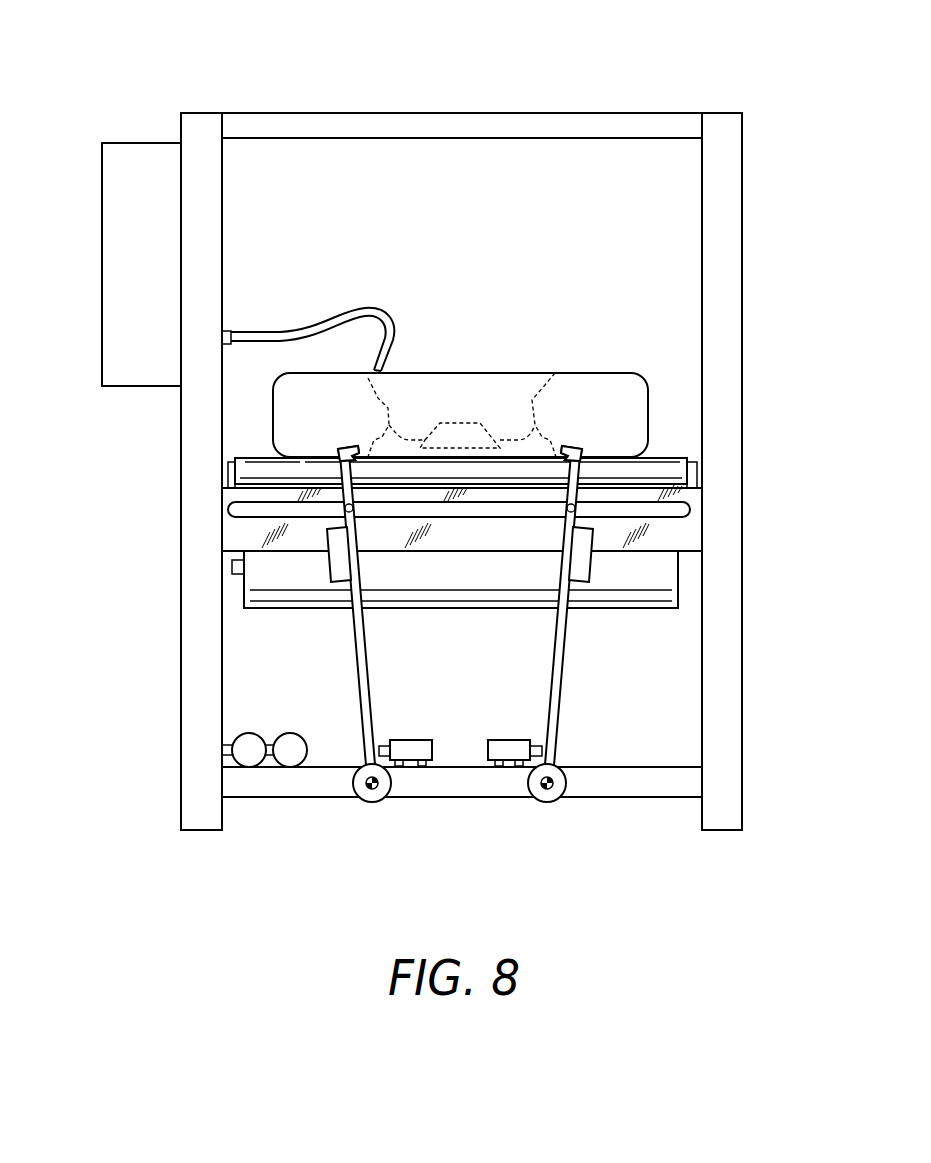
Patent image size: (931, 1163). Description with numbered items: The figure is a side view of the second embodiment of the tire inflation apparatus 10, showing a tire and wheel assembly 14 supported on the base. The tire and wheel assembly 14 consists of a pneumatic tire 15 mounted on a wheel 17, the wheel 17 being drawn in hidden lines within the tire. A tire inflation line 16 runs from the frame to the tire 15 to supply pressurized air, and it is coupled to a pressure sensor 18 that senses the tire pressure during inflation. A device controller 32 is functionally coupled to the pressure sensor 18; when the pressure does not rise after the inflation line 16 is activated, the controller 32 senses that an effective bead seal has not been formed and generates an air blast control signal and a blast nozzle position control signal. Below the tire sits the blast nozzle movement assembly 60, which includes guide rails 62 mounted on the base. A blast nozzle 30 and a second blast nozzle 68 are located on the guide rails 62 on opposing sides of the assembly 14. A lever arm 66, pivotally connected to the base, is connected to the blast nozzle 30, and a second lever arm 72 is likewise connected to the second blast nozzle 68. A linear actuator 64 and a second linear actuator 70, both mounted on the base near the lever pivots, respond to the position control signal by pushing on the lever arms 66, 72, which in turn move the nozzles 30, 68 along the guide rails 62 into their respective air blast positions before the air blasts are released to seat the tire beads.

The apparatus 10 is at (148, 69).
The tire and wheel assembly 14 is at (571, 373).
The pneumatic tire 15 is at (625, 373).
The tire inflation line 16 is at (380, 311).
The wheel 17 is at (437, 383).
The pressure sensor 18 is at (229, 331).
The blast nozzle 30 is at (578, 456).
The device controller 32 is at (125, 253).
The blast nozzle movement assembly 60 is at (462, 843).
The guide rails 62 is at (684, 516).
The linear actuator 64 is at (512, 750).
The lever arm 66 is at (560, 632).
The second blast nozzle 68 is at (345, 456).
The second linear actuator 70 is at (410, 750).
The second lever arm 72 is at (358, 632).